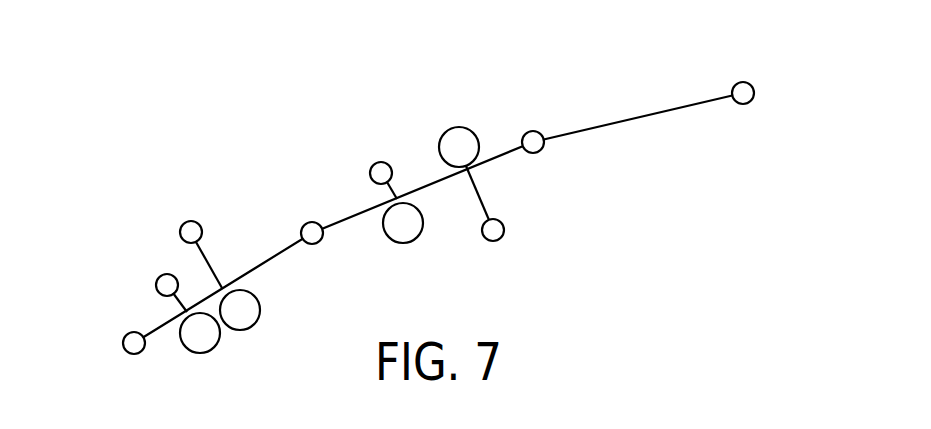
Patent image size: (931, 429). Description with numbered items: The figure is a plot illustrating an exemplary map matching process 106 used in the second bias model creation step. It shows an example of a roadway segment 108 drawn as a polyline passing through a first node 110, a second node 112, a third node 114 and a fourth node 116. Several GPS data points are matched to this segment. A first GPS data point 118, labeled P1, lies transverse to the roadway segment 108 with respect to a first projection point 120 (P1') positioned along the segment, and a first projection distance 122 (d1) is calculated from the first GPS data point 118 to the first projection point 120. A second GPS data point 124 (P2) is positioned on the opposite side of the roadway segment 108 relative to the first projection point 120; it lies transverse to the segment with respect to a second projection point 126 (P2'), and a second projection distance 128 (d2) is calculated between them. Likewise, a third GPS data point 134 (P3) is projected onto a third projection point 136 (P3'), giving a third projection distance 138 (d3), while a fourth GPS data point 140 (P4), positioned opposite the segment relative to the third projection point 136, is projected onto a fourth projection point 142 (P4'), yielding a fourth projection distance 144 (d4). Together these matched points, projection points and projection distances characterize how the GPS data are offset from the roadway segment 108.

The map matching process 106 is at (628, 55).
The roadway segment 108 is at (648, 115).
The first node 110 is at (125, 352).
The second node 112 is at (317, 243).
The third node 114 is at (538, 131).
The fourth node 116 is at (749, 84).
The first GPS data point 118 is at (182, 223).
The first projection point 120 is at (248, 327).
The first projection distance 122 is at (207, 262).
The second GPS data point 124 is at (503, 238).
The second projection point 126 is at (463, 128).
The second projection distance 128 is at (478, 194).
The third GPS data point 134 is at (374, 164).
The third projection point 136 is at (412, 242).
The third projection distance 138 is at (393, 193).
The fourth GPS data point 140 is at (157, 287).
The fourth projection point 142 is at (193, 351).
The fourth projection distance 144 is at (180, 303).